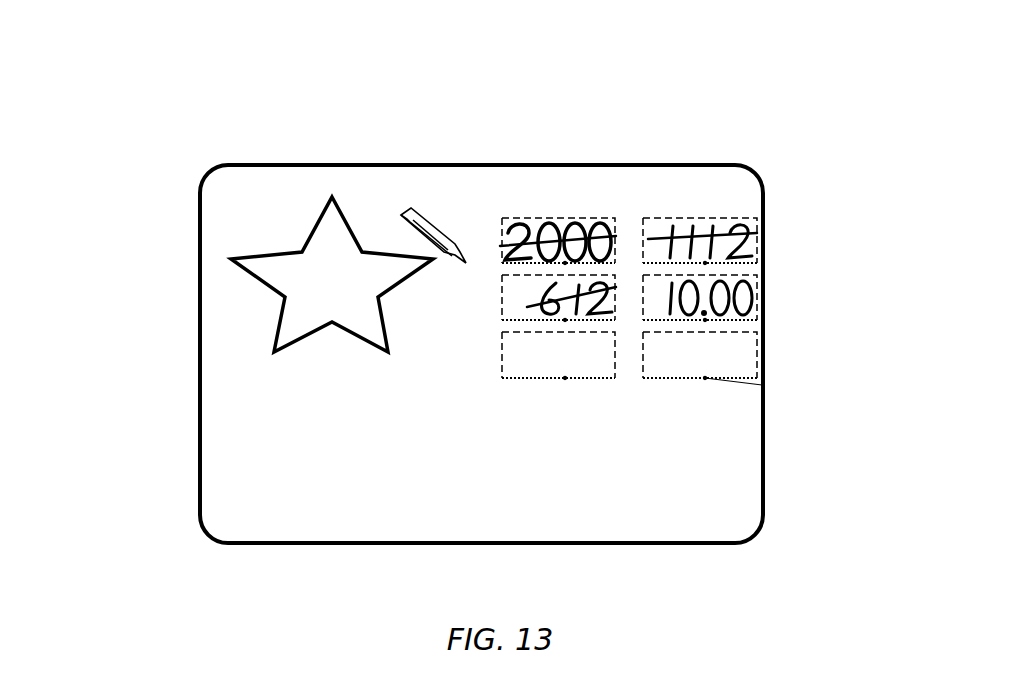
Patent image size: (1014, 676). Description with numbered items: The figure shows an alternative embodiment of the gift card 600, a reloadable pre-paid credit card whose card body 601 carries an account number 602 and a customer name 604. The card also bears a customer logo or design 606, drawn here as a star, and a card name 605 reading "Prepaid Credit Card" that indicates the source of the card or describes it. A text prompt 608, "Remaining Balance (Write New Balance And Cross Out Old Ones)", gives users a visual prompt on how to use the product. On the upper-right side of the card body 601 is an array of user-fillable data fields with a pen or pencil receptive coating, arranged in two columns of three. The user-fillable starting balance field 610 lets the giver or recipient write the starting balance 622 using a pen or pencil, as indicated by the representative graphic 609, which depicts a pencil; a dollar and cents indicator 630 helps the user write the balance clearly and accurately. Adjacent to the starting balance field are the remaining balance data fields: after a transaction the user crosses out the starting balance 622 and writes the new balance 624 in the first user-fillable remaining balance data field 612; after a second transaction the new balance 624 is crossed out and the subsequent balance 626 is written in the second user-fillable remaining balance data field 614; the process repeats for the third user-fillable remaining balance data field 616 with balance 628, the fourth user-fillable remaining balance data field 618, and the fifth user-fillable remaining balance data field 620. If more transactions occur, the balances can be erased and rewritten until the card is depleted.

The gift card 600 is at (117, 80).
The card body 601 is at (355, 198).
The account number 602 is at (718, 460).
The customer name 604 is at (318, 503).
The card name 605 is at (242, 377).
The customer logo or design 606 is at (253, 274).
The text prompt 608 is at (648, 185).
The representative graphic 609 is at (404, 212).
The user-fillable starting balance field 610 is at (513, 221).
The first user-fillable remaining balance data field 612 is at (710, 218).
The second user-fillable remaining balance data field 614 is at (485, 294).
The third user-fillable remaining balance data field 616 is at (762, 272).
The fourth user-fillable remaining balance data field 618 is at (498, 371).
The fifth user-fillable remaining balance data field 620 is at (762, 360).
The starting balance 622 is at (582, 228).
The new balance 624 is at (748, 226).
The subsequent balance 626 is at (576, 296).
The balance 628 is at (762, 293).
The dollar and cents indicator 630 is at (762, 385).